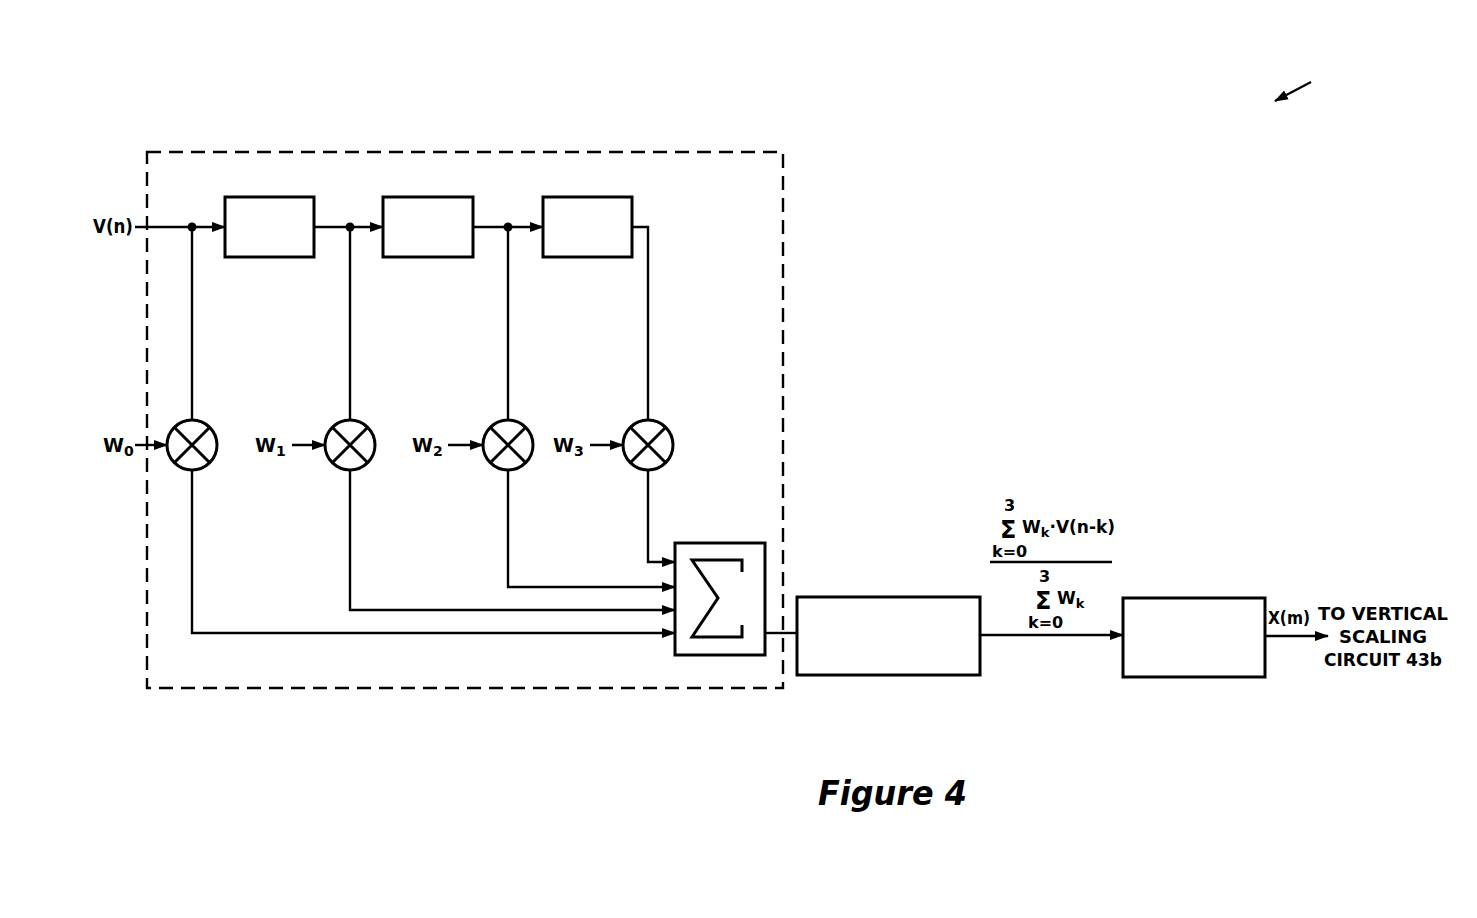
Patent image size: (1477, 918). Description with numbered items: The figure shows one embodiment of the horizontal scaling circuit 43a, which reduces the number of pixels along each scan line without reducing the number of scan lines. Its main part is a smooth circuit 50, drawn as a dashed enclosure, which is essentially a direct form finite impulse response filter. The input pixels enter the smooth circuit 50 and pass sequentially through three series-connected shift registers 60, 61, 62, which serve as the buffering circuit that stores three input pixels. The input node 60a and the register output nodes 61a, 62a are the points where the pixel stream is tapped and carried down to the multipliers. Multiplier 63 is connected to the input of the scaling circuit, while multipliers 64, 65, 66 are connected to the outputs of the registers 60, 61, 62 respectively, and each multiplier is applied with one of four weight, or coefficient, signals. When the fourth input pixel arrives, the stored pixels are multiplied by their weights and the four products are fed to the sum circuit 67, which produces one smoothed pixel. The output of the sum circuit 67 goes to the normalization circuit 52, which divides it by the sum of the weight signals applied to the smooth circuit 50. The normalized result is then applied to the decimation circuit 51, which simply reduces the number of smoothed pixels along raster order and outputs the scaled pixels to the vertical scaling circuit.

The horizontal scaling circuit 43a is at (1351, 81).
The smooth circuit 50 is at (672, 152).
The shift register 60 is at (288, 197).
The shift register 61 is at (446, 197).
The shift register 62 is at (614, 197).
The tap 60a is at (192, 222).
The tap 61a is at (350, 222).
The tap 62a is at (508, 222).
The multiplier 63 is at (210, 426).
The multiplier 64 is at (368, 426).
The multiplier 65 is at (526, 426).
The multiplier 66 is at (666, 426).
The sum circuit 67 is at (735, 543).
The normalization circuit 52 is at (945, 597).
The decimation circuit 51 is at (1232, 598).